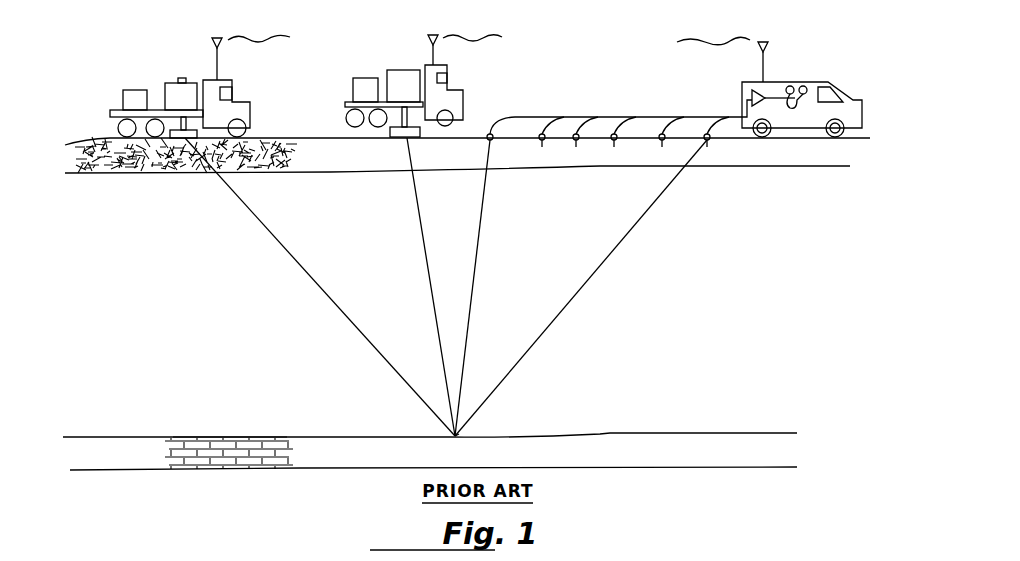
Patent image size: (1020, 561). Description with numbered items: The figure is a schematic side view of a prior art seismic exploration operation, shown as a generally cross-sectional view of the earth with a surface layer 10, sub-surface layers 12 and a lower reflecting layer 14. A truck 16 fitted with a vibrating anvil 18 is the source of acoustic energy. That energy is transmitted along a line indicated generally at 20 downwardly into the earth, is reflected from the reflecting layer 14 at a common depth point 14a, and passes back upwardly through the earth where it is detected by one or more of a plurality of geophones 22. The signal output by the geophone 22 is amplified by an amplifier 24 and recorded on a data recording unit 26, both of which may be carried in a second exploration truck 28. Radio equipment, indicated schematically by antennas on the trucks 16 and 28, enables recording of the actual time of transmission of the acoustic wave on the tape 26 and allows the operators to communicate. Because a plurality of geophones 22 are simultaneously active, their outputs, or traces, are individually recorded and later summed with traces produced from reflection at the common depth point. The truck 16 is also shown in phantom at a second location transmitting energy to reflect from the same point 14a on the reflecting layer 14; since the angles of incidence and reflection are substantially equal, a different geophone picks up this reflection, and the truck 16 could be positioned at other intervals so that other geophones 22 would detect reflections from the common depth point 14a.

The surface layer 10 is at (58, 170).
The sub-surface layers 12 is at (68, 305).
The lower reflecting layer 14 is at (60, 463).
The common depth point 14a is at (455, 436).
The truck 16 is at (113, 110).
The vibrating anvil 18 is at (180, 146).
The line of energy transmission 20 is at (302, 273).
The geophones 22 is at (662, 140).
The amplifier 24 is at (750, 92).
The data recording unit 26 is at (798, 88).
The second exploration truck 28 is at (853, 99).